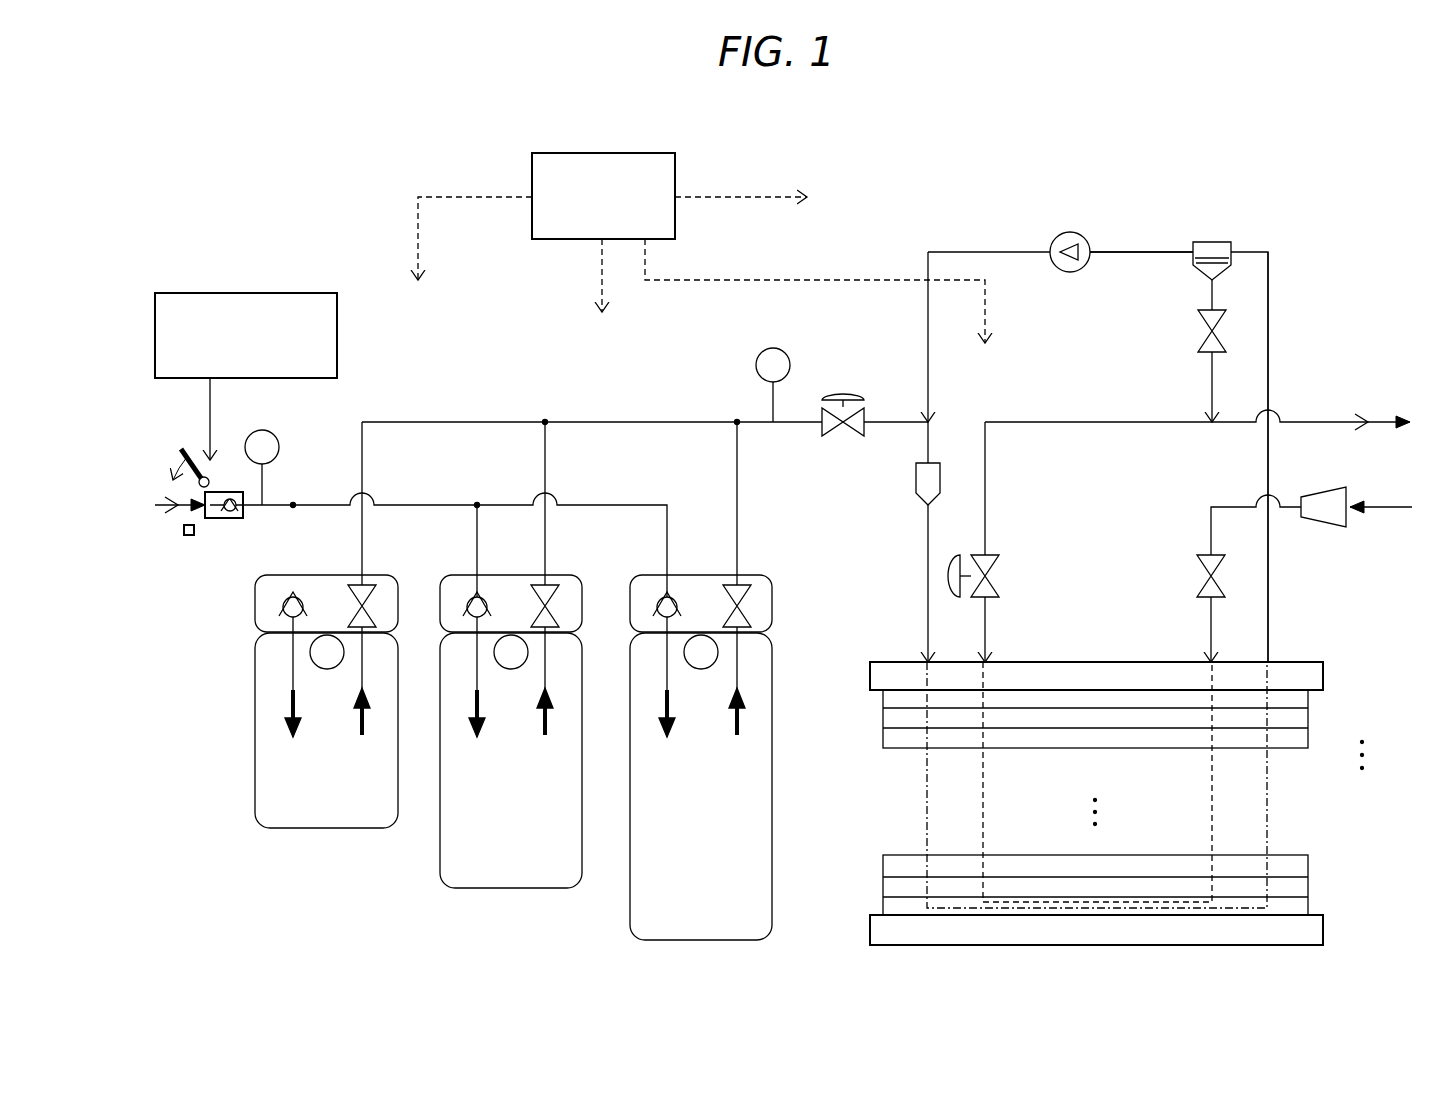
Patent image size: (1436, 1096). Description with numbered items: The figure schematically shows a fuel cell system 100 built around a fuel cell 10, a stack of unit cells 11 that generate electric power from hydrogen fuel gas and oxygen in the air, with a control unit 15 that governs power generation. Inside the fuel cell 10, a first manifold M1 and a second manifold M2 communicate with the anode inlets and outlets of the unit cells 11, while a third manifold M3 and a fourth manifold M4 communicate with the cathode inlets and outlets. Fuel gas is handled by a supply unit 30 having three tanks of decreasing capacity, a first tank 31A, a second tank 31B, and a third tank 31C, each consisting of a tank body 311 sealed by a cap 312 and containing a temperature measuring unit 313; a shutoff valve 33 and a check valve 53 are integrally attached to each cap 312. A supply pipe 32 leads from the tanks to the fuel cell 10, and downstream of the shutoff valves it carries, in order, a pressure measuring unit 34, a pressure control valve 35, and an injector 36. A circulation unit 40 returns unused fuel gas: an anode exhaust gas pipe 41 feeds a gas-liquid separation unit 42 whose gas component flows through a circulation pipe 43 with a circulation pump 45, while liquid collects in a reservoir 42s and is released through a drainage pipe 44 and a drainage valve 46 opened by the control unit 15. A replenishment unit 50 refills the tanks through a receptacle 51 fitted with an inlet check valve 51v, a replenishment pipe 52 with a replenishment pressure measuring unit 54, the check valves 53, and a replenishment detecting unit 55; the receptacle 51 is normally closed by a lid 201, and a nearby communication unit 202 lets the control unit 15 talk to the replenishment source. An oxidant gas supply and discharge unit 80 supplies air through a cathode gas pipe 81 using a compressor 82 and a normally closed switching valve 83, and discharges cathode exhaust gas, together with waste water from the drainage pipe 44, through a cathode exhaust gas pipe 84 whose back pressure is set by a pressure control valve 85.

The fuel cell system 100 is at (296, 198).
The control unit 15 is at (615, 153).
The supply unit 30 is at (700, 362).
The first tank 31A is at (762, 556).
The second tank 31B is at (564, 532).
The third tank 31C is at (374, 532).
The supply pipe 32 is at (615, 420).
The shutoff valve 33 is at (375, 622).
The pressure measuring unit 34 is at (790, 352).
The pressure control valve 35 is at (848, 392).
The injector 36 is at (916, 483).
The circulation unit 40 is at (918, 245).
The anode exhaust gas pipe 41 is at (1270, 310).
The gas-liquid separation unit 42 is at (1215, 242).
The reservoir 42s is at (1212, 278).
The circulation pipe 43 is at (1122, 252).
The drainage pipe 44 is at (1210, 300).
The circulation pump 45 is at (1068, 232).
The drainage valve 46 is at (1196, 335).
The replenishment unit 50 is at (368, 358).
The receptacle 51 is at (222, 540).
The inlet check valve 51v is at (228, 520).
The replenishment pipe 52 is at (318, 503).
The check valve 53 is at (303, 597).
The replenishment pressure measuring unit 54 is at (278, 436).
The replenishment detecting unit 55 is at (300, 293).
The oxidant gas supply and discharge unit 80 is at (1040, 398).
The cathode gas pipe 81 is at (1208, 528).
The compressor 82 is at (1318, 528).
The switching valve 83 is at (1198, 562).
The cathode exhaust gas pipe 84 is at (1090, 422).
The pressure control valve 85 is at (990, 568).
The fuel cell 10 is at (1297, 657).
The unit cell 11 is at (1300, 700).
The lid 201 is at (188, 446).
The communication unit 202 is at (190, 537).
The tank body 311 is at (325, 828).
The cap 312 is at (385, 575).
The temperature measuring unit 313 is at (330, 670).
The first manifold M1 is at (925, 780).
The second manifold M2 is at (1272, 778).
The third manifold M3 is at (1208, 778).
The fourth manifold M4 is at (990, 776).